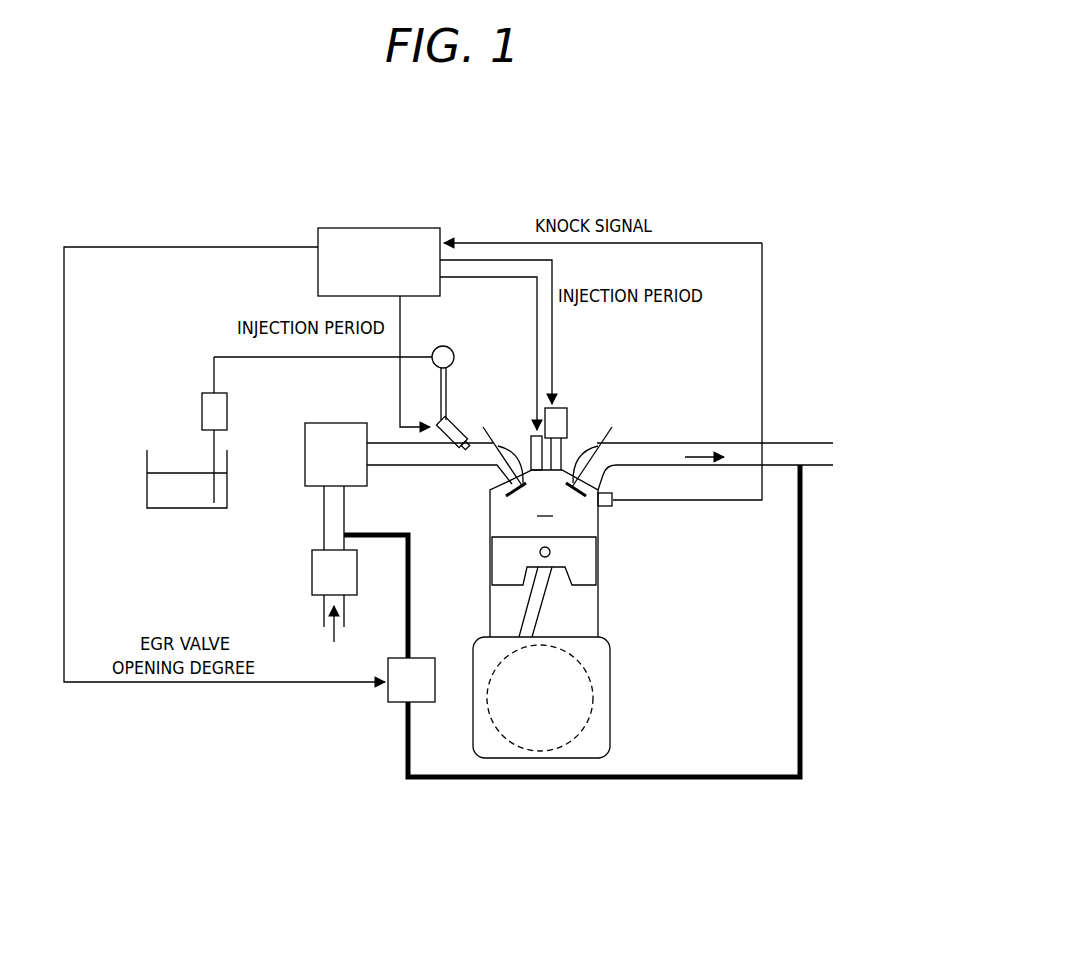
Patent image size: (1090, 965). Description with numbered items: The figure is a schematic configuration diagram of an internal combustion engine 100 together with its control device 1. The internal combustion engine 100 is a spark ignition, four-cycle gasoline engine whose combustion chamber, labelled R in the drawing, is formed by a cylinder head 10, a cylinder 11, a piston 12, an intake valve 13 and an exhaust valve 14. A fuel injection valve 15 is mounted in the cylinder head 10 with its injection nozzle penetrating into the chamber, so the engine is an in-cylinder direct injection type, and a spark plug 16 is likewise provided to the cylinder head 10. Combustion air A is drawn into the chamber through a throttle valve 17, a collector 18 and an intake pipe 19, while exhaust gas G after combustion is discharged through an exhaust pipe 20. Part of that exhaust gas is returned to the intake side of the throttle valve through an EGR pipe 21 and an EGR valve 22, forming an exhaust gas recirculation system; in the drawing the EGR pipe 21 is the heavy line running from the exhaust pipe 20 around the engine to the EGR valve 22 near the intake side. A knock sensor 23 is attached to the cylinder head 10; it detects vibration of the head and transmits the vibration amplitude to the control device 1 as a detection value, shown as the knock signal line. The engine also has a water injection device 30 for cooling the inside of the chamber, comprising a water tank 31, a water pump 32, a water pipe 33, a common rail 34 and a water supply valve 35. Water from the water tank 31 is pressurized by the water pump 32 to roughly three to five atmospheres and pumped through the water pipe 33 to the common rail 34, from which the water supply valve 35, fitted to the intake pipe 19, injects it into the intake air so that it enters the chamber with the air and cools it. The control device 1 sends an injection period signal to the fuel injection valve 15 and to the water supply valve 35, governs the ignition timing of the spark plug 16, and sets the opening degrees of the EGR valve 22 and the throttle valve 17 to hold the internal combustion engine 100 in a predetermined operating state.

The control device 1 is at (368, 228).
The cylinder head 10 is at (566, 468).
The cylinder 11 is at (599, 631).
The piston 12 is at (585, 567).
The intake valve 13 is at (516, 497).
The exhaust valve 14 is at (580, 495).
The fuel injection valve 15 is at (568, 404).
The spark plug 16 is at (532, 440).
The throttle valve 17 is at (312, 575).
The collector 18 is at (305, 455).
The intake pipe 19 is at (433, 467).
The exhaust pipe 20 is at (684, 443).
The EGR pipe 21 is at (640, 780).
The EGR valve 22 is at (392, 703).
The knock sensor 23 is at (614, 500).
The water injection device 30 is at (153, 329).
The water tank 31 is at (147, 482).
The water pump 32 is at (200, 410).
The water pipe 33 is at (247, 355).
The common rail 34 is at (445, 345).
The water supply valve 35 is at (465, 425).
The internal combustion engine 100 is at (690, 194).